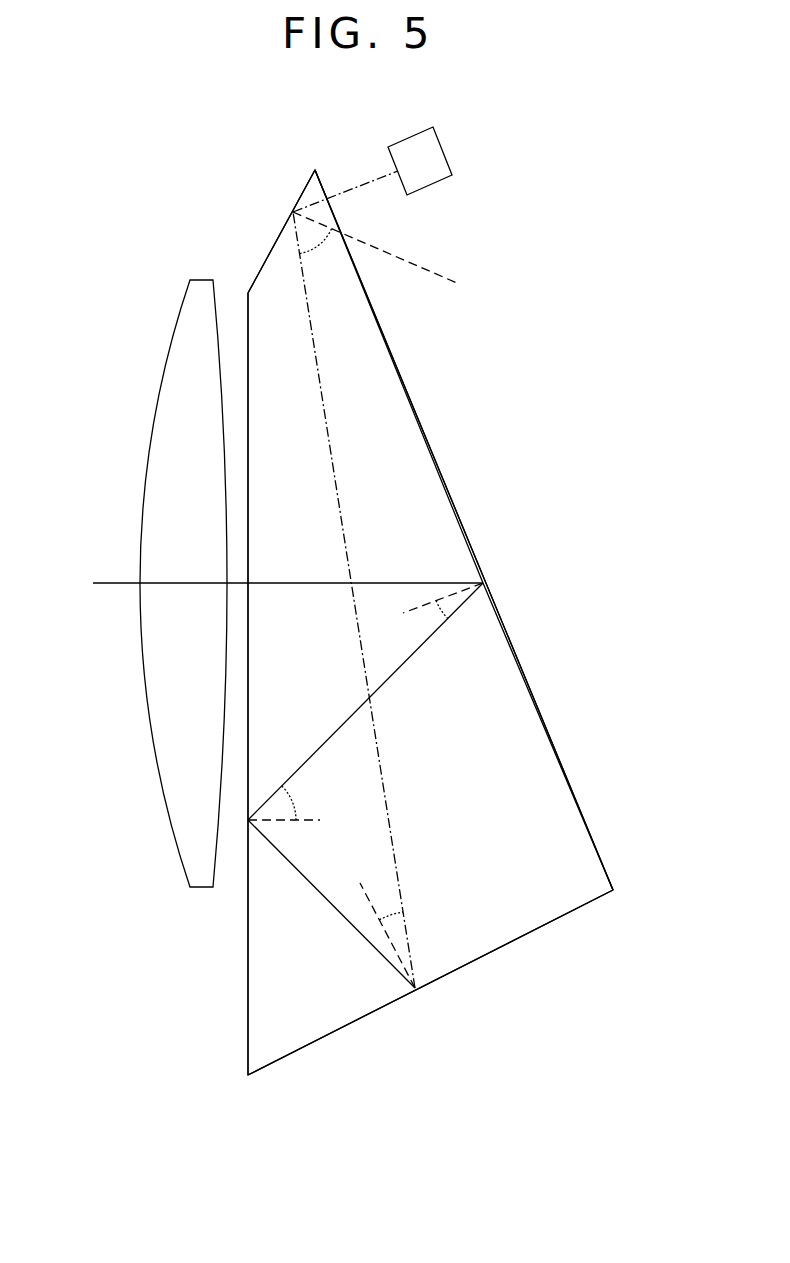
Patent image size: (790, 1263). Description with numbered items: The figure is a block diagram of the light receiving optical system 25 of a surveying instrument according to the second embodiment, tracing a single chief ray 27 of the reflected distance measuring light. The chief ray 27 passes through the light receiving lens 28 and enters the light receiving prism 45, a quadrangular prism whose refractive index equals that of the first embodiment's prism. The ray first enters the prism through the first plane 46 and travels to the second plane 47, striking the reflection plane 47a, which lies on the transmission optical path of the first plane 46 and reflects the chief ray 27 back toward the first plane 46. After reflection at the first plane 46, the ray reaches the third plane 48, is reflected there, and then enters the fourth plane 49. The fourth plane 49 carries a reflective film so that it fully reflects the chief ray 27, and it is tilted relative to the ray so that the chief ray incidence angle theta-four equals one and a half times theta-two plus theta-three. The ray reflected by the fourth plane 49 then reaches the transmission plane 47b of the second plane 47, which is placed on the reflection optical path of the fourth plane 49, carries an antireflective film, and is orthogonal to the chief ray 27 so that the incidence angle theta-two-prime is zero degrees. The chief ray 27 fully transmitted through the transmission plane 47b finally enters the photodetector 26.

The light receiving optical system 25 is at (95, 159).
The photodetector 26 is at (449, 154).
The chief ray 27 is at (112, 583).
The light receiving lens 28 is at (160, 787).
The light receiving prism 45 is at (404, 622).
The first plane 46 is at (248, 962).
The second plane 47 is at (455, 507).
The reflection plane 47a is at (540, 712).
The transmission plane 47b is at (343, 216).
The third plane 48 is at (470, 968).
The fourth plane 49 is at (270, 246).